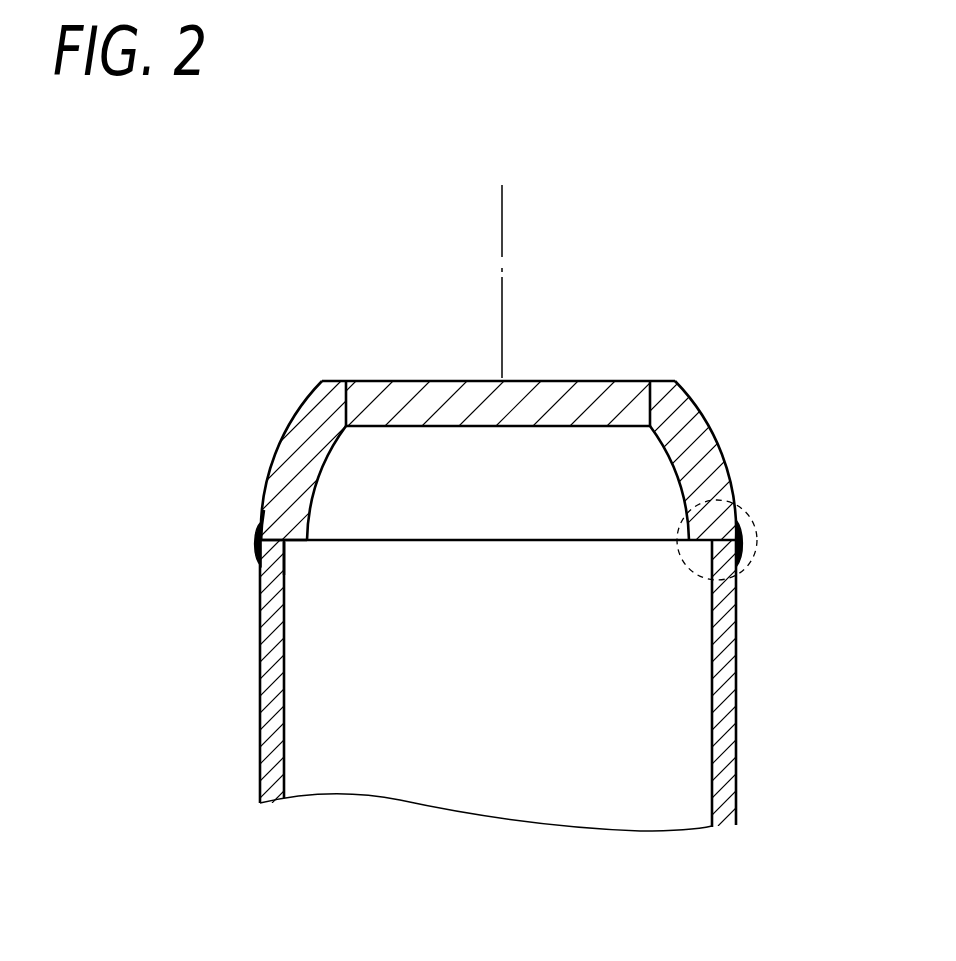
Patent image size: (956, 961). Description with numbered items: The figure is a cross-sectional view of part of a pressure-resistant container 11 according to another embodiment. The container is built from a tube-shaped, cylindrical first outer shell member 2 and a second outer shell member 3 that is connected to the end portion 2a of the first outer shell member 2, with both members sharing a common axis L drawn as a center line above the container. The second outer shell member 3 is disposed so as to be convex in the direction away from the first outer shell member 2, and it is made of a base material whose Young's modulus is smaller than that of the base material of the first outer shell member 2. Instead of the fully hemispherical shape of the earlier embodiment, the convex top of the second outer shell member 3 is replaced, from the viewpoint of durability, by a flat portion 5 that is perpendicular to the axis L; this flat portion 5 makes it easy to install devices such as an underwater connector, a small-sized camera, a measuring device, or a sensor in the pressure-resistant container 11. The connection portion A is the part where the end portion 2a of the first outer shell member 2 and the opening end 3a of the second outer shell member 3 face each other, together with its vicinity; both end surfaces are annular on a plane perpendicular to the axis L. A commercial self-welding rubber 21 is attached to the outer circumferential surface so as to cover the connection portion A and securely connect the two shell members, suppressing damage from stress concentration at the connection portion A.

The pressure-resistant container 11 is at (331, 178).
The axis L is at (503, 218).
The flat portion 5 is at (577, 393).
The second outer shell member 3 is at (707, 470).
The opening end 3a is at (277, 523).
The connection portion A is at (755, 540).
The self-welding rubber 21 is at (258, 550).
The first outer shell member 2 is at (722, 650).
The end portion 2a is at (273, 563).